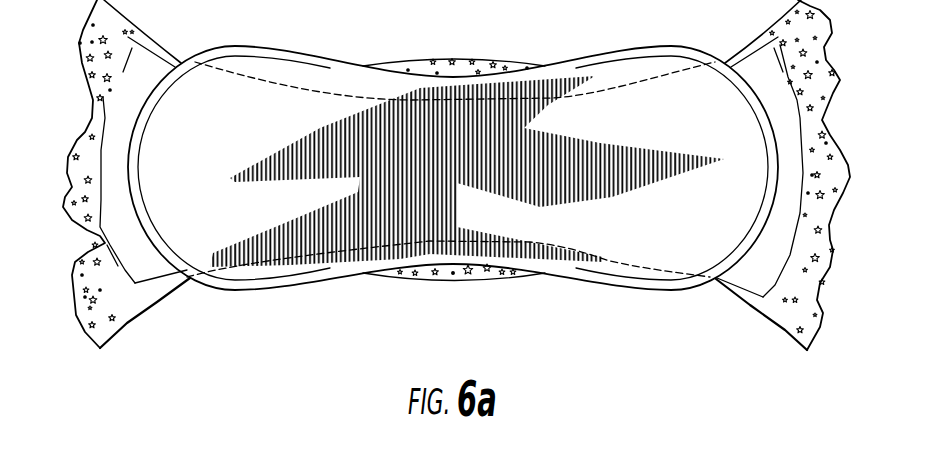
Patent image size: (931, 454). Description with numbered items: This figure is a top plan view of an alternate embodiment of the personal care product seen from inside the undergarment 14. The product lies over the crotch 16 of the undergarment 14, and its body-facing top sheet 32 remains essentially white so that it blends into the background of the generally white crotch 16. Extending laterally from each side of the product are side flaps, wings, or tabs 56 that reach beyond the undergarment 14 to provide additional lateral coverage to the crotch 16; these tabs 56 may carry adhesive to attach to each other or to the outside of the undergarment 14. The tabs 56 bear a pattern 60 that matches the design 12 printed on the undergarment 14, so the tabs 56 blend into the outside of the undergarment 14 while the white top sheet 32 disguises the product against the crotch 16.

The design 12 is at (82, 278).
The undergarment 14 is at (122, 299).
The crotch 16 is at (153, 268).
The top sheet 32 is at (313, 113).
The tabs 56 is at (448, 282).
The pattern 60 is at (492, 279).